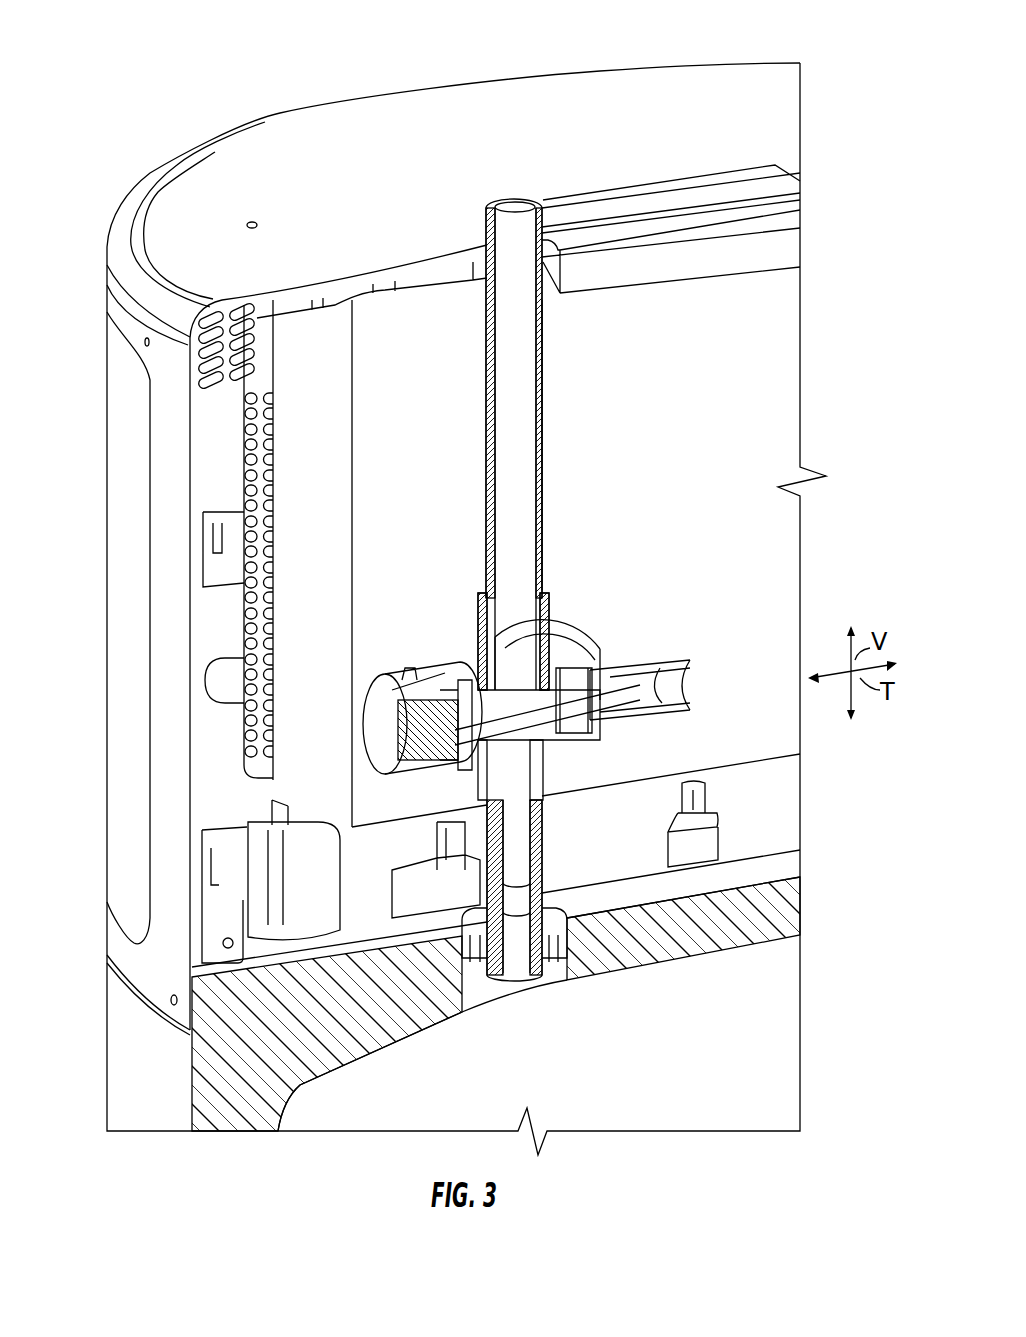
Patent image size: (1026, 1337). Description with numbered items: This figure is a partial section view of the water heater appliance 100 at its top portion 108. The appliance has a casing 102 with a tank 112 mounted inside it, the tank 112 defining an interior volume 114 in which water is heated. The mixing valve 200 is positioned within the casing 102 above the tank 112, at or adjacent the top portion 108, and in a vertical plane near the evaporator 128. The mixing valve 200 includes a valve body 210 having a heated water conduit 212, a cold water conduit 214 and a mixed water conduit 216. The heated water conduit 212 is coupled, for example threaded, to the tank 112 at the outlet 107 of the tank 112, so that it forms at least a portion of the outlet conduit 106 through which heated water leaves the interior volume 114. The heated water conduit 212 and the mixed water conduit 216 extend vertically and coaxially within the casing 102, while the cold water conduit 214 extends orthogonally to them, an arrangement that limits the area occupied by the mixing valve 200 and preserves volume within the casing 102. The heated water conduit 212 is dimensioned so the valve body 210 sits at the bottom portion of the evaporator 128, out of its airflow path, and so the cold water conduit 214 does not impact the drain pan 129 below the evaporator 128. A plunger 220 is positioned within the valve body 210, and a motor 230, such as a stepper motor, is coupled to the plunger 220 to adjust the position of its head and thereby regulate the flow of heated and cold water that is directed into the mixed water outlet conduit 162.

The water heater appliance 100 is at (188, 77).
The casing 102 is at (127, 493).
The outlet conduit 106 is at (490, 220).
The outlet of tank 107 is at (511, 992).
The top portion 108 is at (103, 246).
The tank 112 is at (238, 1110).
The interior volume 114 is at (347, 1099).
The evaporator 128 is at (313, 330).
The drain pan 129 is at (785, 797).
The mixed water outlet conduit 162 is at (543, 412).
The mixing valve 200 is at (510, 675).
The valve body 210 is at (583, 637).
The heated water conduit 212 is at (540, 834).
The cold water conduit 214 is at (653, 668).
The mixed water conduit 216 is at (550, 600).
The plunger 220 is at (540, 750).
The motor 230 is at (377, 710).